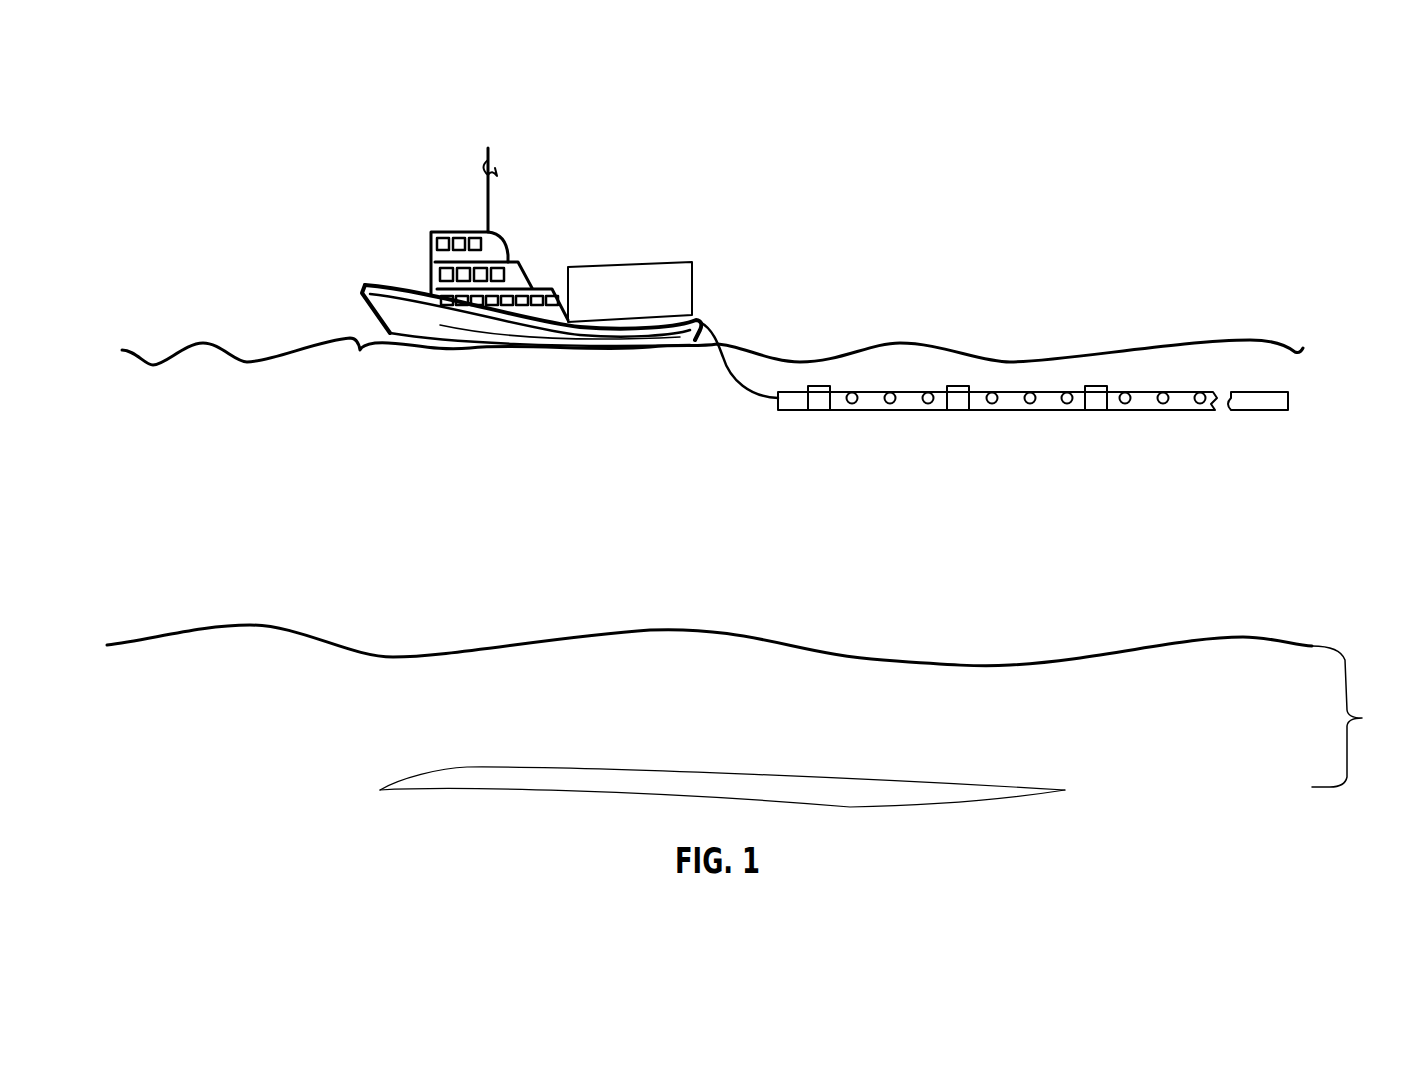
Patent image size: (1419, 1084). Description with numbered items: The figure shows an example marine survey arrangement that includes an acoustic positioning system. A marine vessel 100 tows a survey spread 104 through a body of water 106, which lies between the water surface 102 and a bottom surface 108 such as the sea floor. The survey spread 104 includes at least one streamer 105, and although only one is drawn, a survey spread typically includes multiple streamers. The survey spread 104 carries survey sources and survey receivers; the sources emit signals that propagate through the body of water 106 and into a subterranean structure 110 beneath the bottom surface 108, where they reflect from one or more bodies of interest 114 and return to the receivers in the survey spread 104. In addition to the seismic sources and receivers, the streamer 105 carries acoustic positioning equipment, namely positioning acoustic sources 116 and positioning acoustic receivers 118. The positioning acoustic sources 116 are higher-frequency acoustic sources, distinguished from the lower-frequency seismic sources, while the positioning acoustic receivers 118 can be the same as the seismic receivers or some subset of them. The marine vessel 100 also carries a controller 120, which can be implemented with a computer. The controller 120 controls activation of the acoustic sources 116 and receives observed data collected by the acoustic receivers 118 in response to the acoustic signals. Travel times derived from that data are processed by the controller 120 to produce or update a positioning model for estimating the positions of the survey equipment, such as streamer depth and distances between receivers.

The marine vessel 100 is at (407, 330).
The water surface 102 is at (752, 357).
The survey spread 104 is at (912, 422).
The streamer 105 is at (772, 405).
The body of water 106 is at (1236, 557).
The bottom surface 108 is at (750, 635).
The subterranean structure 110 is at (1362, 716).
The body of interest 114 is at (653, 777).
The positioning acoustic source 116 is at (818, 387).
The positioning acoustic receiver 118 is at (928, 392).
The controller 120 is at (657, 258).